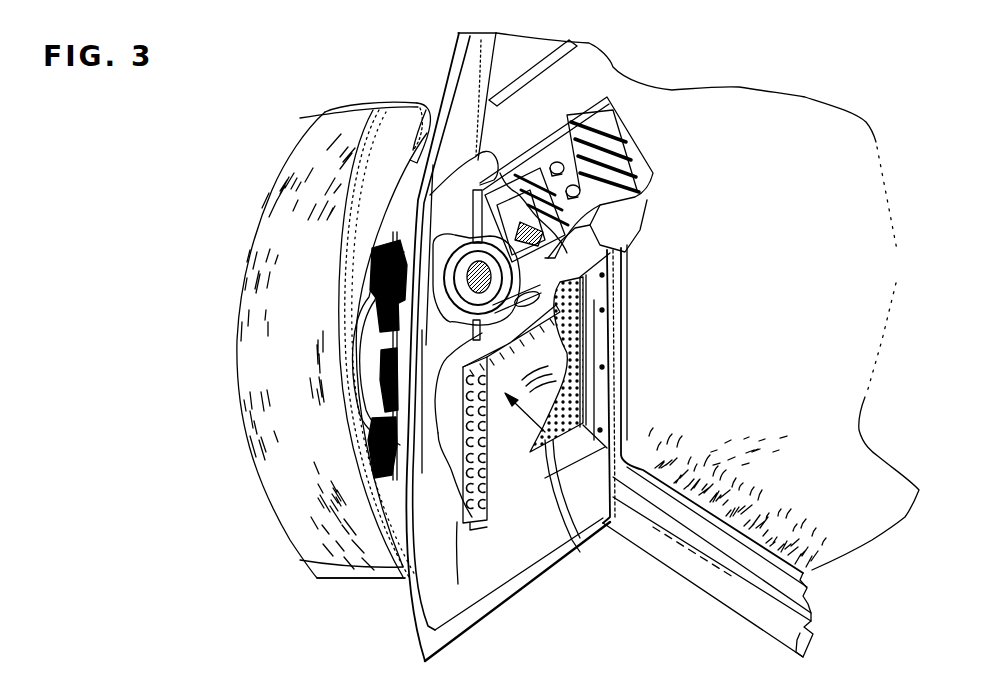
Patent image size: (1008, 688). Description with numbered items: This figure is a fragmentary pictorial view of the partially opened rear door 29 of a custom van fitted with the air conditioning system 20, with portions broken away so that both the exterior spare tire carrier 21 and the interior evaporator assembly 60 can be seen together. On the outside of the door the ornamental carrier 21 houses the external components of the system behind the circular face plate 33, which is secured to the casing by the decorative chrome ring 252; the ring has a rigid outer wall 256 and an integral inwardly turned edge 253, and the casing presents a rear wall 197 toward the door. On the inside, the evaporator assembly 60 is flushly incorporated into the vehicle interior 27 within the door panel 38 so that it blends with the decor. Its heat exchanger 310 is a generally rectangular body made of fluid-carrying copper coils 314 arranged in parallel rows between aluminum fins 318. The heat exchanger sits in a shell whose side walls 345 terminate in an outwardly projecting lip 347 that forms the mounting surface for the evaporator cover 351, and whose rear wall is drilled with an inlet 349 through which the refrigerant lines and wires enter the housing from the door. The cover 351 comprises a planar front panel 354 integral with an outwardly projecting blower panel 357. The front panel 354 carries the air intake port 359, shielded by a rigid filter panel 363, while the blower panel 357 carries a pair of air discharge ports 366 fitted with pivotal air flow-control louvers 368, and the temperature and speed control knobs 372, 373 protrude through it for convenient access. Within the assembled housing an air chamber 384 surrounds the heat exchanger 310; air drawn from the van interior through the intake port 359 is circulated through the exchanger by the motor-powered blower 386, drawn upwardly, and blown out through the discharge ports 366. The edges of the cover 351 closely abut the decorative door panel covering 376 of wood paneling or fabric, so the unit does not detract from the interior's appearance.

The air conditioning system 20 is at (116, 292).
The spare tire carrier 21 is at (238, 274).
The vehicle interior 27 is at (824, 281).
The rear door 29 is at (398, 618).
The face plate 33 is at (412, 92).
The door panel 38 is at (608, 90).
The evaporator assembly 60 is at (645, 132).
The rear wall 197 is at (418, 107).
The chrome ring 252 is at (260, 358).
The inwardly turned edge 253 is at (426, 110).
The outer wall 256 is at (305, 533).
The heat exchanger 310 is at (580, 552).
The fluid-carrying coils 314 is at (462, 452).
The fins 318 is at (548, 478).
The side walls 345 is at (456, 441).
The lip 347 is at (472, 185).
The inlet 349 is at (446, 357).
The evaporator cover 351 is at (600, 240).
The front panel 354 is at (606, 351).
The blower panel 357 is at (612, 214).
The air intake port 359 is at (608, 273).
The filter panel 363 is at (562, 333).
The air discharge ports 366 is at (652, 138).
The air flow-control louvers 368 is at (640, 158).
The temperature control knob 372 is at (627, 186).
The speed control knob 373 is at (592, 200).
The decorative door panel covering 376 is at (506, 557).
The air chamber 384 is at (452, 396).
The blower 386 is at (460, 278).